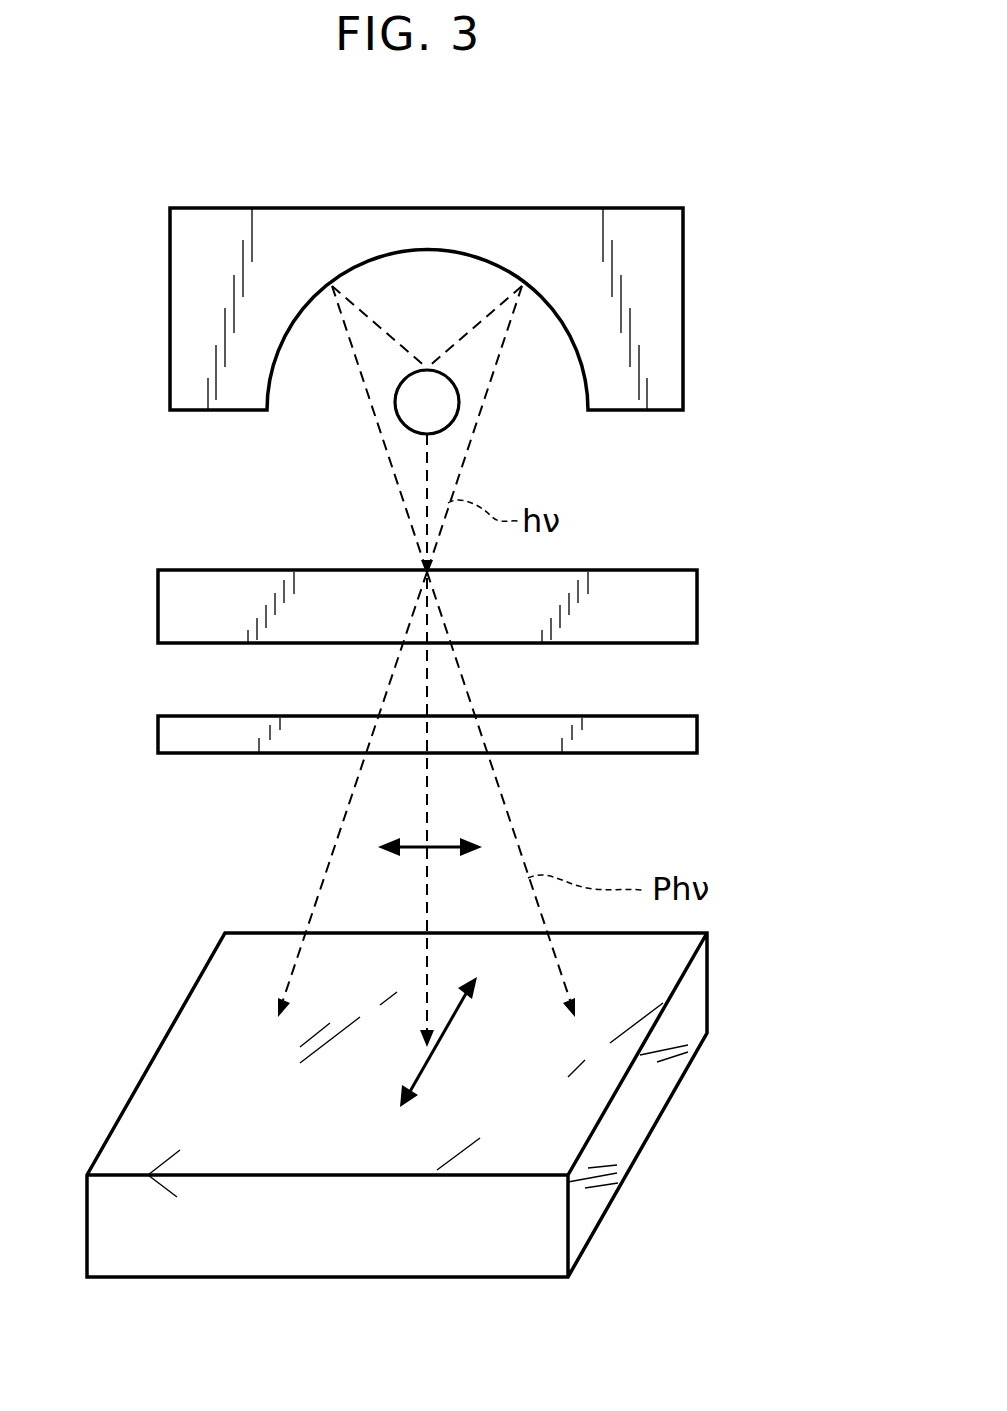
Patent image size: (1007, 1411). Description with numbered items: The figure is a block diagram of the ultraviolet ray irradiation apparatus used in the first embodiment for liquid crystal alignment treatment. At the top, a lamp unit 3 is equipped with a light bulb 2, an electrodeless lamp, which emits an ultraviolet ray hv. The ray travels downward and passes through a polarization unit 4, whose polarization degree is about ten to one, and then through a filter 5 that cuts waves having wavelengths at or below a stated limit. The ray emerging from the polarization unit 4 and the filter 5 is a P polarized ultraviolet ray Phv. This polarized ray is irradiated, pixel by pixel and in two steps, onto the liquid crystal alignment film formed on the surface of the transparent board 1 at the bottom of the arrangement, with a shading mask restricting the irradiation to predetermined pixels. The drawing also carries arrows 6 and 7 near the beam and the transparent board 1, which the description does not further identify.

The transparent board 1 is at (222, 1025).
The light bulb 2 is at (440, 407).
The lamp unit 3 is at (678, 303).
The polarization unit 4 is at (680, 608).
The filter 5 is at (680, 733).
The scanning direction arrow 6 is at (440, 842).
The substrate movement direction arrow 7 is at (437, 1055).